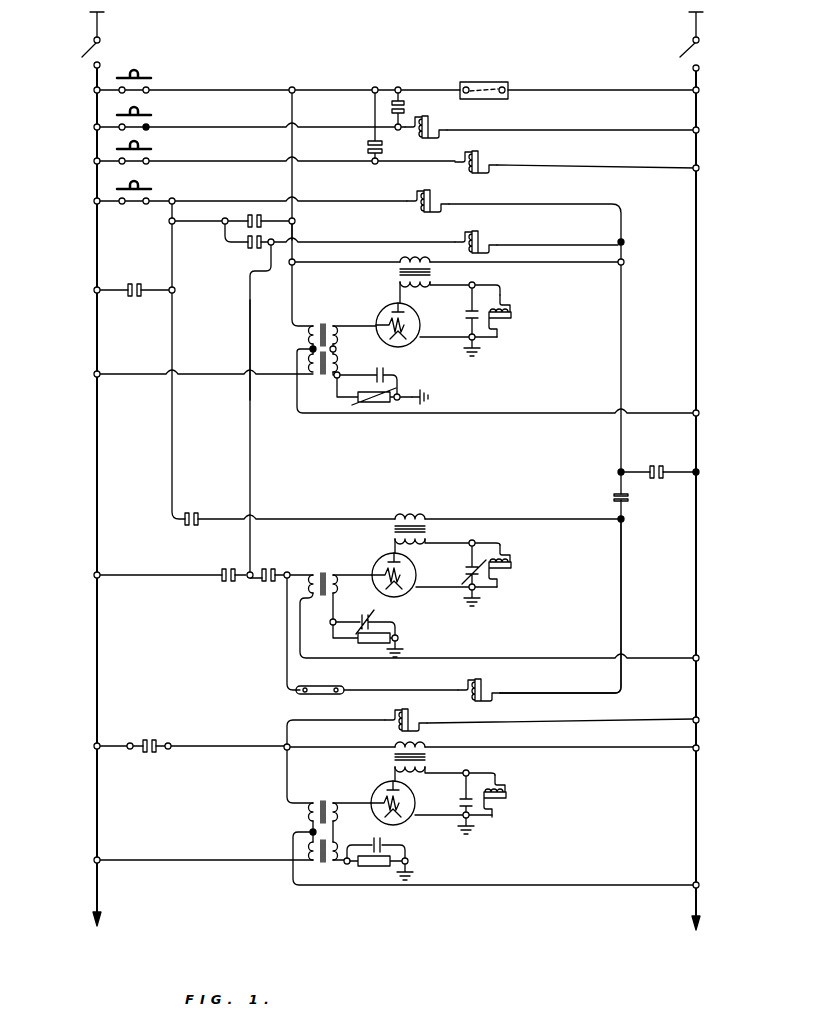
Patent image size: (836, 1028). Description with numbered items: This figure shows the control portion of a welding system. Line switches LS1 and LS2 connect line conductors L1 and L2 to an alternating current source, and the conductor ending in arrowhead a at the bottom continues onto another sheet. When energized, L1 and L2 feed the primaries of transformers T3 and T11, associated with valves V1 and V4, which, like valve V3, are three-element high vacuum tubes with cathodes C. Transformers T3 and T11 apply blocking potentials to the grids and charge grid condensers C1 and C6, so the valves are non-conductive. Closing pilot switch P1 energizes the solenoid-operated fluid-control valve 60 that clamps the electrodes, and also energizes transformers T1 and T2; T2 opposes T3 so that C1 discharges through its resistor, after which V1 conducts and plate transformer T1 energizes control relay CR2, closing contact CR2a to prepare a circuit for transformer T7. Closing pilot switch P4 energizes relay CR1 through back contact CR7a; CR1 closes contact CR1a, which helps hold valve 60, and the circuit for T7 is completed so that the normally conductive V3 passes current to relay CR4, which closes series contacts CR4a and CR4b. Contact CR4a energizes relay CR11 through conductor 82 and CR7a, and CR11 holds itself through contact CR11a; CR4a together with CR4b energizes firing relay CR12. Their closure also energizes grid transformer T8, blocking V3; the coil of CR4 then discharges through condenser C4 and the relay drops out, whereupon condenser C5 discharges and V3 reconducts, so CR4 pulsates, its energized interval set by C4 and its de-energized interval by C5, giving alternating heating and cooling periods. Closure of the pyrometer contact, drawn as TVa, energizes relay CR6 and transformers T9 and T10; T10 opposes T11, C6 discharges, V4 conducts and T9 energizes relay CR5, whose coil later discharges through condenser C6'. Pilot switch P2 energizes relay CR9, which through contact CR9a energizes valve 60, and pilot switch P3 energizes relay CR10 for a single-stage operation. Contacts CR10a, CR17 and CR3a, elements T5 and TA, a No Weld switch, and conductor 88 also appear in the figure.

The line conductor L1 is at (94, 341).
The line conductor L2 is at (698, 305).
The line switch LS1 is at (76, 48).
The line switch LS2 is at (706, 50).
The arrowhead a is at (104, 920).
The pilot switch P1 is at (146, 78).
The pilot switch P2 is at (146, 115).
The pilot switch P3 is at (146, 149).
The pilot switch P4 is at (146, 189).
The solenoid operated fluid-control valve 60 is at (485, 82).
The contact of relay CR9 CR9a is at (405, 107).
The relay contact CR10a is at (366, 147).
The relay CR9 is at (428, 142).
The relay CR10 is at (484, 161).
The relay CR1 is at (412, 207).
The phase shift control relay CR11 is at (486, 243).
The contact of relay CR1 CR1a is at (268, 220).
The contact of relay CR11 CR11a is at (247, 250).
The conductor 88 is at (295, 220).
The relay contact CR17 is at (148, 279).
The conductor 82 is at (251, 345).
The plate transformer T1 is at (416, 260).
The valve V1 is at (418, 311).
The transformer T2 is at (325, 326).
The blocking transformer T3 is at (338, 364).
The grid condenser C1 is at (370, 372).
The cathode C is at (420, 336).
The control relay CR2 is at (512, 320).
The anode transformer T7 is at (428, 518).
The valve V3 is at (414, 574).
The grid transformer T8 is at (322, 573).
The condenser C5 is at (378, 620).
The timing resistor T5 is at (356, 641).
The condenser C4 is at (480, 594).
The relay CR4 is at (512, 573).
The contact of relay CR2 CR2a is at (190, 527).
The contact of relay CR4 CR4a is at (228, 584).
The contact of relay CR4 CR4b is at (266, 584).
The back contact CR7a is at (657, 465).
The relay contact CR3a is at (628, 500).
The no-weld switch No Weld is at (325, 681).
The firing relay CR12 is at (486, 688).
The relay CR6 is at (414, 716).
The relay contact TVa is at (151, 744).
The transformer T9 is at (432, 764).
The valve V4 is at (414, 802).
The transformer T10 is at (318, 803).
The transformer T11 is at (320, 863).
The grid condenser C6 is at (387, 844).
The timing resistor TA is at (370, 866).
The condenser C6' is at (482, 807).
The relay CR5 is at (505, 801).